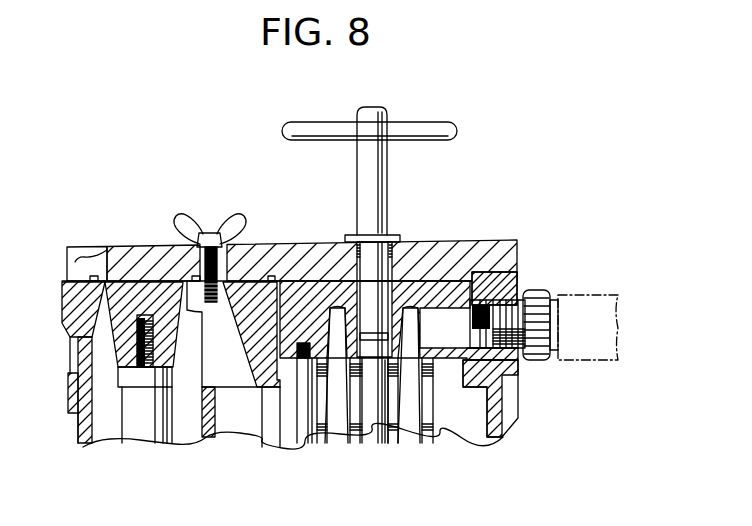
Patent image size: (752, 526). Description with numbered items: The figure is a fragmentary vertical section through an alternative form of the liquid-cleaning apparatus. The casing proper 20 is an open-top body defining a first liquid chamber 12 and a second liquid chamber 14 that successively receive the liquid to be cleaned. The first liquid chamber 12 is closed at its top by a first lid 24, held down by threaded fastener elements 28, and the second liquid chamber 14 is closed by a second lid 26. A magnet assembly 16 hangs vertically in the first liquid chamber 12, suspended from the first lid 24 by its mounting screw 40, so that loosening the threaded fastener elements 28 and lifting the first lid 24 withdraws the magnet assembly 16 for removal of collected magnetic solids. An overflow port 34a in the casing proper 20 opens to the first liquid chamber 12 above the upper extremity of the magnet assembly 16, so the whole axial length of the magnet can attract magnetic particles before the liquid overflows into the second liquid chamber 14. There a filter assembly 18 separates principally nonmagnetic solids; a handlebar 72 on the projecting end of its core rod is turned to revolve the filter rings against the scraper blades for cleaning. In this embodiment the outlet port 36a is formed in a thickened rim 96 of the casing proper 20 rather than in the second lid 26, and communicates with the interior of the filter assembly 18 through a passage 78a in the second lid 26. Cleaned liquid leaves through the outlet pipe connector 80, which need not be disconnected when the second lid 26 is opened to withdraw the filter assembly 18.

The first liquid chamber 12 is at (180, 422).
The second liquid chamber 14 is at (277, 438).
The magnet assembly 16 is at (120, 425).
The filter assembly 18 is at (435, 402).
The casing proper 20 is at (495, 409).
The first lid 24 is at (92, 247).
The second lid 26 is at (281, 246).
The threaded fastener elements 28 is at (213, 233).
The overflow port 34a is at (233, 367).
The outlet port 36a is at (535, 290).
The mounting screw 40 is at (155, 350).
The handlebar 72 is at (443, 127).
The passage 78a is at (420, 309).
The outlet pipe connector 80 is at (547, 291).
The thickened rim 96 is at (518, 360).